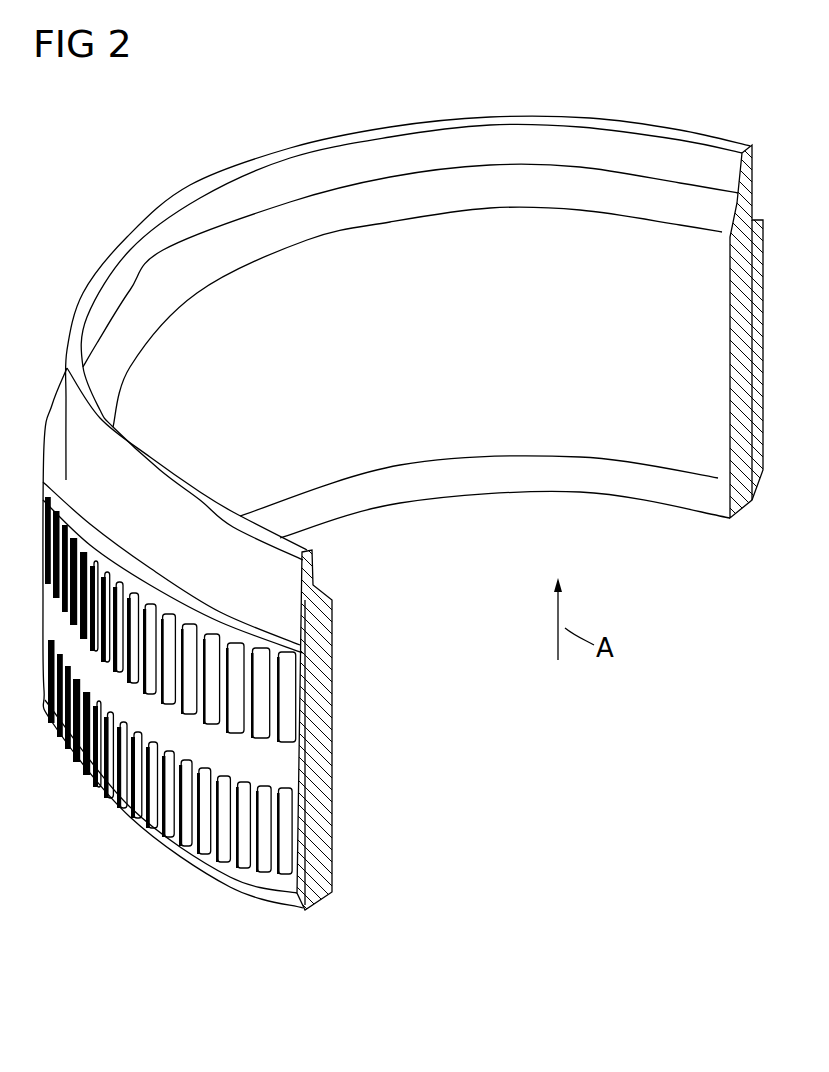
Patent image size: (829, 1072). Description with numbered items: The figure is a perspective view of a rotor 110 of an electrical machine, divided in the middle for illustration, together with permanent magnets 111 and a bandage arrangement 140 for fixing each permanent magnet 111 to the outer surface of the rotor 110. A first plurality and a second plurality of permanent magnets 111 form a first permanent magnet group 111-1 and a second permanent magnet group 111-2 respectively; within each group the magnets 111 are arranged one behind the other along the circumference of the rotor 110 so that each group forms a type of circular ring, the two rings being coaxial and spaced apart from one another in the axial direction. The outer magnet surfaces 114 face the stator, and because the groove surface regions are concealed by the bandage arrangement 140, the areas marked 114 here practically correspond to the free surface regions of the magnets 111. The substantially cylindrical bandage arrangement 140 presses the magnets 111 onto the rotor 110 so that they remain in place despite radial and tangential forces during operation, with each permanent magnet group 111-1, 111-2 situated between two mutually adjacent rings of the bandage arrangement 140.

The rotor 110 is at (611, 86).
The permanent magnets 111 is at (231, 685).
The first permanent magnet group 111-1 is at (320, 830).
The second permanent magnet group 111-2 is at (320, 694).
The outer magnet surfaces 114 is at (137, 605).
The bandage arrangement 140 is at (280, 763).